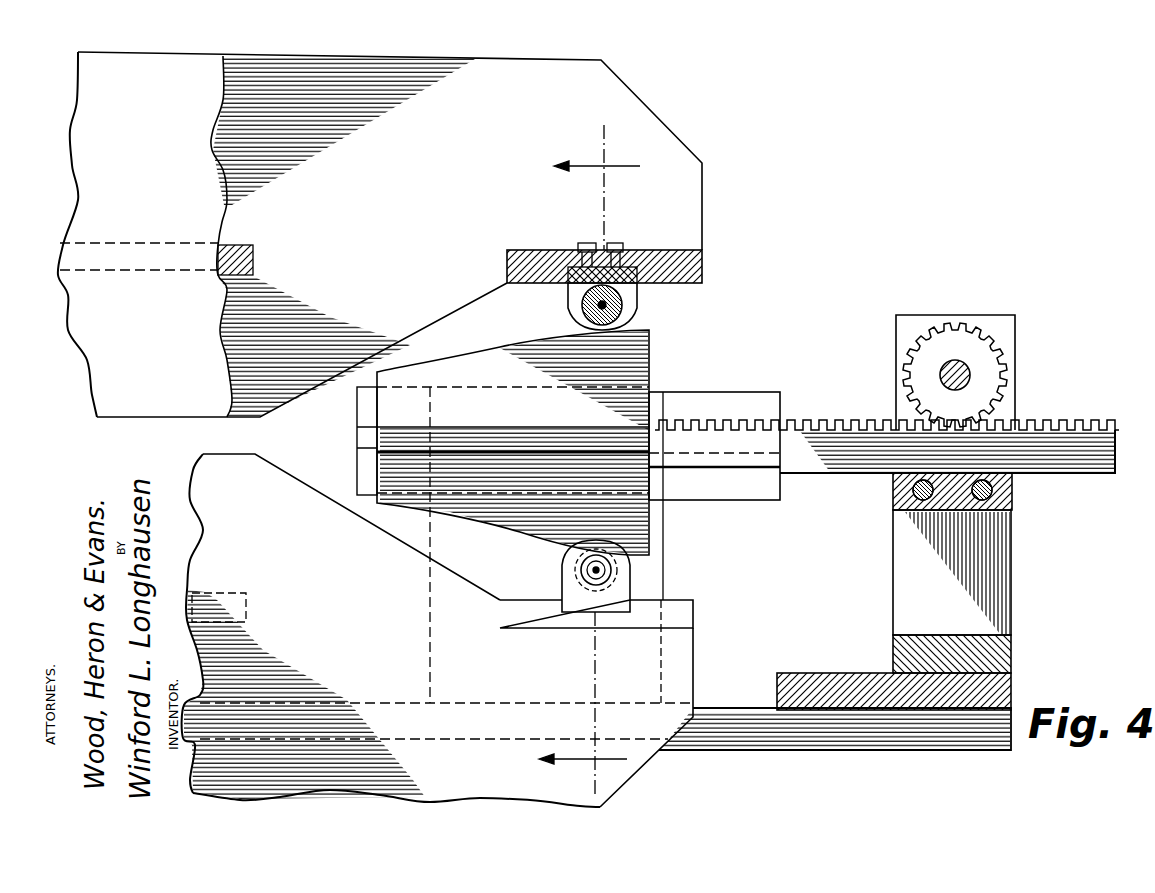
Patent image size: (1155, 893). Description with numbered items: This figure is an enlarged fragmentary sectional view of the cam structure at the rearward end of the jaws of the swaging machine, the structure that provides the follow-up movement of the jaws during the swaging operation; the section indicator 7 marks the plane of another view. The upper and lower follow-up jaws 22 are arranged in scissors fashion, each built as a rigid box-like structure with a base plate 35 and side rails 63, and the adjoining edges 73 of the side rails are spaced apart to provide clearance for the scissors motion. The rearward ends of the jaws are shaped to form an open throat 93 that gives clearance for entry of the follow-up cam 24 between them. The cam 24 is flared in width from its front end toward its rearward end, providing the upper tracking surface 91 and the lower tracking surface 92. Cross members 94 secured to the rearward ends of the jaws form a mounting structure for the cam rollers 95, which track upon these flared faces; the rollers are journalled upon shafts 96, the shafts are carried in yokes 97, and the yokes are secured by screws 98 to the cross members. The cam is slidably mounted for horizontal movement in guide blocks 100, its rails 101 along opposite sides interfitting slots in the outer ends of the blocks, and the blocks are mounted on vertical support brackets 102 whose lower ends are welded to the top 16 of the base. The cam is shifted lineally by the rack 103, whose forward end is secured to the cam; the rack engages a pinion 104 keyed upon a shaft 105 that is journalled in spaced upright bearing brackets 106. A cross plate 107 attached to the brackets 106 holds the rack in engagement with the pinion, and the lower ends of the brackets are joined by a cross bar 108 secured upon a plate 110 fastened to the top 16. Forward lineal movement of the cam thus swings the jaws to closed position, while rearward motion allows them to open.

The top 16 is at (731, 708).
The follow-up jaw 22 is at (482, 70).
The follow-up cam 24 is at (632, 368).
The base plate 35 is at (236, 246).
The side rails 63 is at (353, 76).
The adjoining edges 73 is at (240, 455).
The section line 7 is at (589, 462).
The upper tracking surface 91 is at (528, 347).
The lower tracking surface 92 is at (522, 538).
The open throat 93 is at (656, 318).
The cross members 94 is at (694, 268).
The cam rollers 95 is at (624, 305).
The shafts 96 is at (592, 311).
The yokes 97 is at (576, 296).
The screws 98 is at (617, 245).
The guide blocks 100 is at (752, 400).
The rails 101 is at (486, 427).
The vertical support brackets 102 is at (666, 523).
The rack 103 is at (1100, 440).
The pinion 104 is at (986, 373).
The shaft 105 is at (966, 356).
The bearing brackets 106 is at (992, 548).
The cross plate 107 is at (996, 496).
The cross bar 108 is at (993, 655).
The plate 110 is at (924, 691).